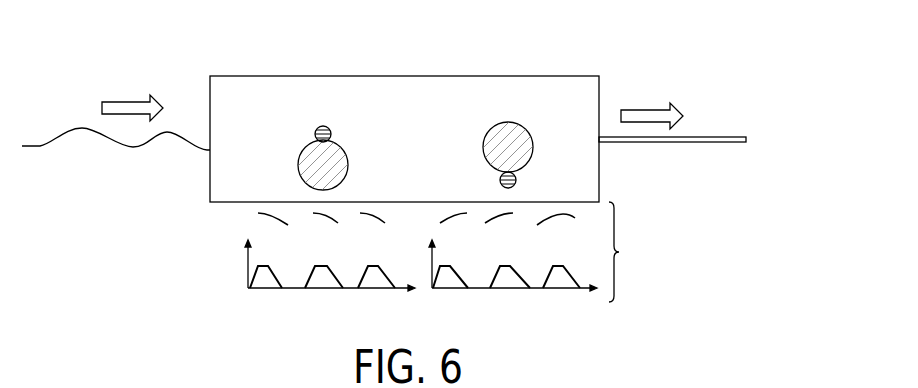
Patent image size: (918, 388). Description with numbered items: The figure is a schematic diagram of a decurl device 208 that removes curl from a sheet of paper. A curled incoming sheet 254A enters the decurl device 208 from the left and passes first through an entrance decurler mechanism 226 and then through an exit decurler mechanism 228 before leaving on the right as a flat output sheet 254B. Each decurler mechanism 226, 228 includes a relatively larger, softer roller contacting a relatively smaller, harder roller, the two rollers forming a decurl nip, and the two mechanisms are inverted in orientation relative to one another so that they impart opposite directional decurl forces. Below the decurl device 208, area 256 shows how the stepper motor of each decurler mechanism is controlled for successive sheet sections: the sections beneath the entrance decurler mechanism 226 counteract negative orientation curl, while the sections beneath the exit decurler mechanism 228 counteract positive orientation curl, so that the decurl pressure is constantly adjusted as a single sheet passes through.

The incoming sheet 254A is at (82, 129).
The decurl device 208 is at (411, 76).
The entrance decurler mechanism 226 is at (303, 145).
The exit decurler mechanism 228 is at (515, 120).
The flattened sheet 254B is at (720, 136).
The area 256 is at (388, 261).